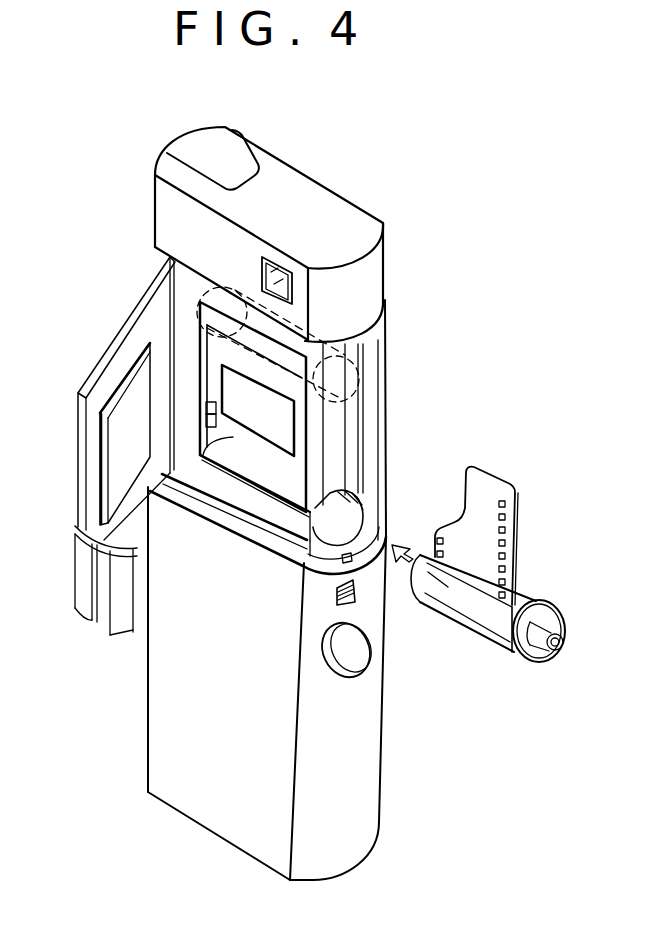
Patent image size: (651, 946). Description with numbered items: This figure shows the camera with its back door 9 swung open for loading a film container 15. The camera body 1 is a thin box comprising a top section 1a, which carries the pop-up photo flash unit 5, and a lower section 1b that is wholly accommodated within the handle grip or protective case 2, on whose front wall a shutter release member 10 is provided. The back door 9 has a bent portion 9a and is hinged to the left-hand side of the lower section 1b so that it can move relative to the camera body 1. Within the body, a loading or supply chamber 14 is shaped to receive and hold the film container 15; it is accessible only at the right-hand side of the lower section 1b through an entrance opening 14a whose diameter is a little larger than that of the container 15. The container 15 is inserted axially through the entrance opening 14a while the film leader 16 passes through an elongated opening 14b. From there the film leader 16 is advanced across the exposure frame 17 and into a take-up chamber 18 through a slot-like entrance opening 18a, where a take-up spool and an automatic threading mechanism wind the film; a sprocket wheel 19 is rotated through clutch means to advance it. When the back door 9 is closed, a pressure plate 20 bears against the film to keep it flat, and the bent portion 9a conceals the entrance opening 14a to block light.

The camera body 1 is at (140, 220).
The top section 1a is at (332, 209).
The lower section 1b is at (386, 367).
The protective case 2 is at (392, 749).
The photo flash unit 5 is at (196, 149).
The back door 9 is at (78, 457).
The bent portion 9a is at (85, 606).
The shutter release member 10 is at (350, 650).
The loading chamber 14 is at (280, 496).
The entrance opening 14a is at (332, 528).
The elongated opening 14b is at (240, 470).
The film container 15 is at (500, 624).
The film leader 16 is at (482, 490).
The exposure frame 17 is at (290, 437).
The take-up chamber 18 is at (356, 364).
The slot-like entrance opening 18a is at (207, 313).
The sprocket wheel 19 is at (206, 410).
The pressure plate 20 is at (114, 427).